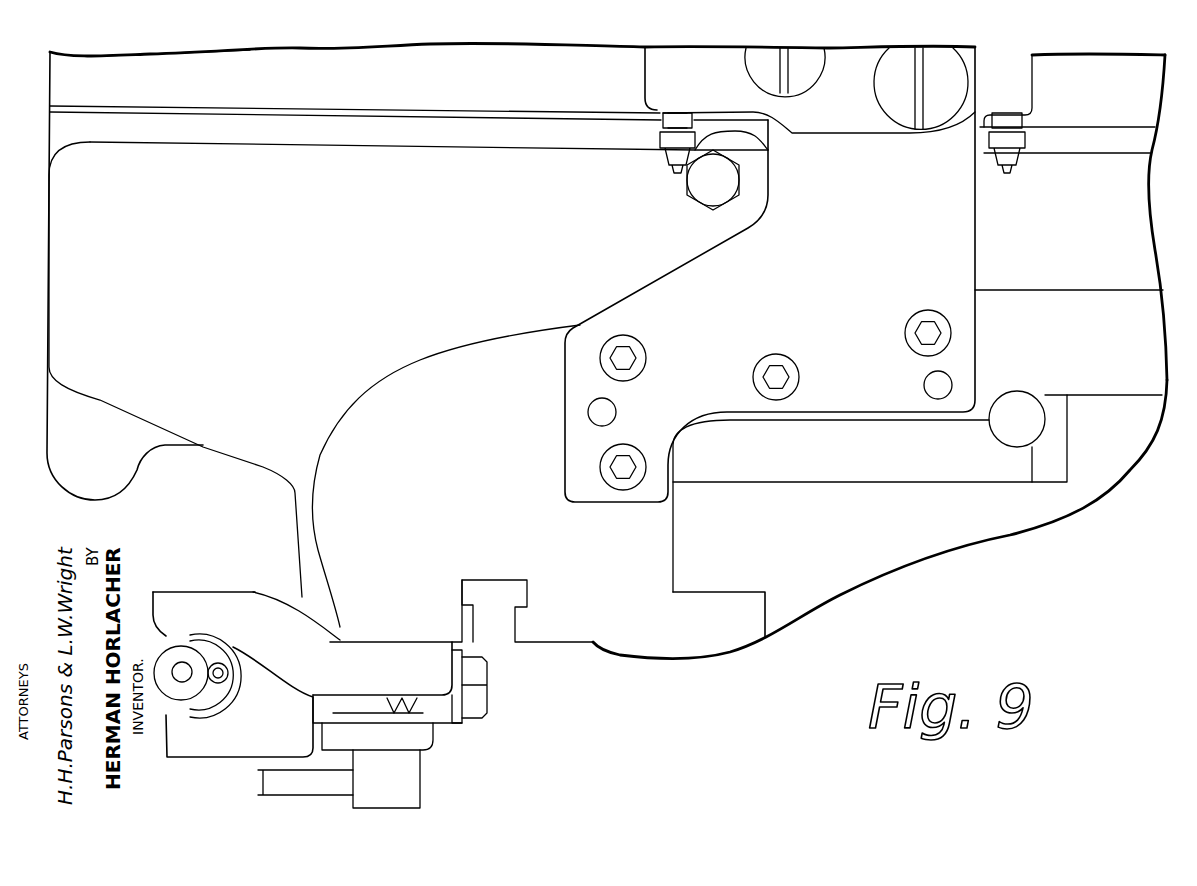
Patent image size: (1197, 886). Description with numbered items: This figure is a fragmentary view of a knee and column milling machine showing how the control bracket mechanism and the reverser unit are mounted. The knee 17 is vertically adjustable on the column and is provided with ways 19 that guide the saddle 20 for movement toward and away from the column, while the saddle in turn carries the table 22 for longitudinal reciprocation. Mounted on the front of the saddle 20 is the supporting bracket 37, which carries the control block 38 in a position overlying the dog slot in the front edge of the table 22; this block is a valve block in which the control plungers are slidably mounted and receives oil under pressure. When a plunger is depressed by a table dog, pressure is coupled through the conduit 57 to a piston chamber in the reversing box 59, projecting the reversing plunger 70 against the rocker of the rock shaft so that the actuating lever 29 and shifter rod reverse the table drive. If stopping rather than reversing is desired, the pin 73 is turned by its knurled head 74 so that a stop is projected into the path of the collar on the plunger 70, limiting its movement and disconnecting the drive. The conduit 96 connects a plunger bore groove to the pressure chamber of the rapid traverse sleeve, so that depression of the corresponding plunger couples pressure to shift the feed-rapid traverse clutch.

The knee 17 is at (930, 547).
The ways 19 is at (710, 594).
The saddle 20 is at (1130, 243).
The table 22 is at (308, 58).
The actuating lever 29 is at (264, 790).
The supporting bracket 37 is at (955, 233).
The control block 38 is at (705, 56).
The conduit 57 is at (667, 170).
The reversing box 59 is at (190, 752).
The reversing plunger 70 is at (368, 680).
The pin 73 is at (181, 664).
The knurled head 74 is at (222, 662).
The conduit 96 is at (1012, 172).